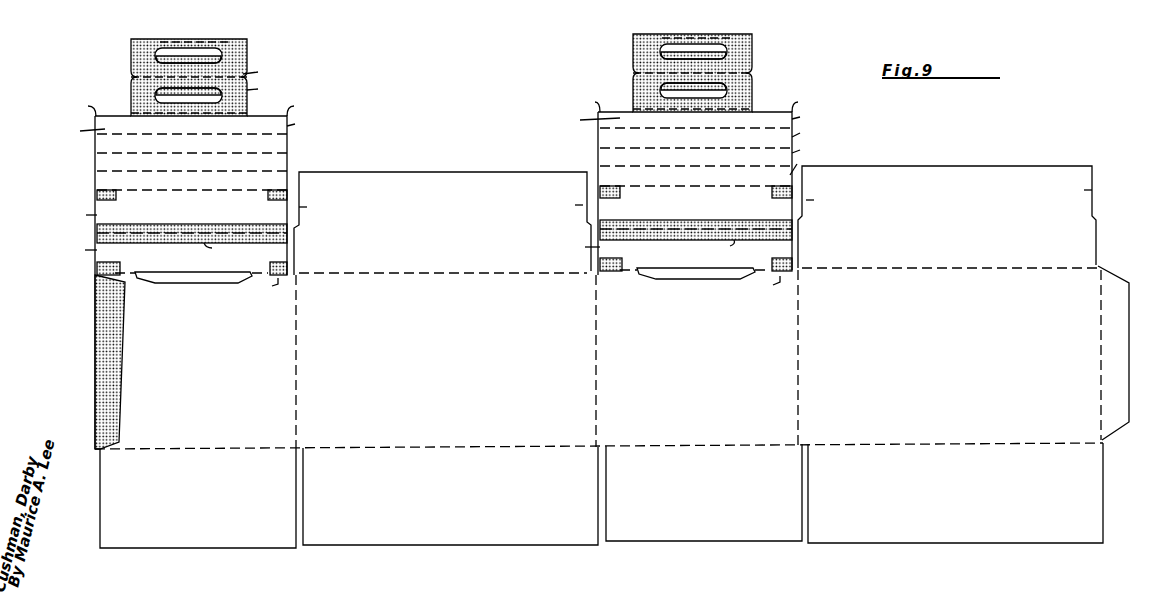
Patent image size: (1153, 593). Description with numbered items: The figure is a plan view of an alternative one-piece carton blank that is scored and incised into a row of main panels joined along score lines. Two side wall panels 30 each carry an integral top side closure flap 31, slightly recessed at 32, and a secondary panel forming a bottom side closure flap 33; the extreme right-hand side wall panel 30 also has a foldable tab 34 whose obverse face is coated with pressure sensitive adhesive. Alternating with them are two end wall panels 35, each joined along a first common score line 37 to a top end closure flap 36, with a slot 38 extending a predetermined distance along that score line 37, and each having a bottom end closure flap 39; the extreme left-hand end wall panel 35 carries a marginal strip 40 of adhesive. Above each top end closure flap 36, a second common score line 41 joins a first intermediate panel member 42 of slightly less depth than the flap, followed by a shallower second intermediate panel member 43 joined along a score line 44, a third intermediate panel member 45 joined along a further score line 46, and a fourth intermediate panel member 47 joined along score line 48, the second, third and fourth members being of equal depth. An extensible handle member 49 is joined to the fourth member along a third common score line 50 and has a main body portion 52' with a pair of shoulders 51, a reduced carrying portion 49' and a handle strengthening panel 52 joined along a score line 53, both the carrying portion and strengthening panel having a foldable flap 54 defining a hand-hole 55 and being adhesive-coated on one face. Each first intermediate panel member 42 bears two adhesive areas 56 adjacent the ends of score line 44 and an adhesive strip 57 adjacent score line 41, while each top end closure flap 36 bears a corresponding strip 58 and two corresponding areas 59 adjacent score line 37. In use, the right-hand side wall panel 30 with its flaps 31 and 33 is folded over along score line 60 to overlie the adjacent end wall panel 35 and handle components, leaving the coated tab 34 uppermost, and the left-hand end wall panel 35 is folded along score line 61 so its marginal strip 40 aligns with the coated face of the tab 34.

The side wall panel 30 is at (599, 359).
The top side closure flap 31 is at (449, 175).
The recess 32 is at (697, 198).
The bottom side closure flap 33 is at (443, 547).
The foldable tab 34 is at (1140, 338).
The end wall panel 35 is at (443, 280).
The top end closure flap 36 is at (331, 248).
The first common score line 37 is at (514, 287).
The slot 38 is at (183, 272).
The bottom end closure flap 39 is at (243, 550).
The marginal strip 40 is at (122, 335).
The second common score line 41 is at (204, 233).
The first intermediate panel member 42 is at (386, 207).
The second intermediate panel member 43 is at (806, 165).
The score line 44 is at (238, 190).
The third intermediate panel member 45 is at (807, 149).
The further score line 46 is at (242, 171).
The fourth intermediate panel member 47 is at (807, 133).
The score line 48 is at (240, 153).
The extensible handle member 49 is at (555, 120).
The reduced carrying portion 49' is at (519, 83).
The third common score line 50 is at (236, 134).
The shoulders 51 is at (446, 104).
The handle strengthening panel 52 is at (441, 74).
The main body portion 52' is at (340, 126).
The score line 53 is at (764, 62).
The foldable flap 54 is at (210, 56).
The hand-hole 55 is at (181, 48).
The areas of pressure sensitive adhesive 56 is at (116, 197).
The strip of pressure sensitive adhesive 57 is at (164, 233).
The strip of pressure sensitive adhesive 58 is at (469, 248).
The areas of pressure sensitive adhesive 59 is at (112, 262).
The score line 60 is at (799, 341).
The score line 61 is at (297, 318).